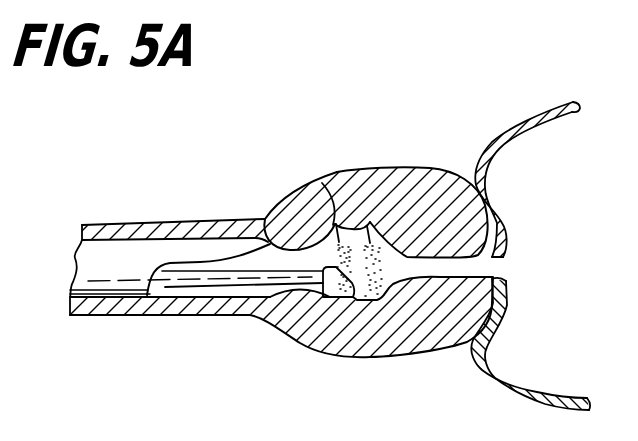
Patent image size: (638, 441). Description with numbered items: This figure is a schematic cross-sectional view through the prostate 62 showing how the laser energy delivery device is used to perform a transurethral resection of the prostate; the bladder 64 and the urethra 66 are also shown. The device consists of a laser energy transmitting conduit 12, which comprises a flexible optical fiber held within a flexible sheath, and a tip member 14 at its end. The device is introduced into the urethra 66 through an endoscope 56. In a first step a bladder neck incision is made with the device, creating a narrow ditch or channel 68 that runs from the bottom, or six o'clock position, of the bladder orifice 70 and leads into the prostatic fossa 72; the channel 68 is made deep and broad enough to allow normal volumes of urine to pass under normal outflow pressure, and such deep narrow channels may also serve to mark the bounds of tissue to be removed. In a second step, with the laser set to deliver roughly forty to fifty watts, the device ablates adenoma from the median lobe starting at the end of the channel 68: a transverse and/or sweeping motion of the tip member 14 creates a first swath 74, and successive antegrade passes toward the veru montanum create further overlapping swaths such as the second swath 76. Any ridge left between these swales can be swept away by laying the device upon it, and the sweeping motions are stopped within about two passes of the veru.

The laser energy transmitting conduit 12 is at (236, 276).
The tip member 14 is at (337, 284).
The endoscope 56 is at (128, 278).
The prostate 62 is at (297, 330).
The bladder 64 is at (550, 137).
The urethra 66 is at (93, 303).
The channel 68 is at (446, 272).
The bladder orifice 70 is at (507, 263).
The prostatic fossa 72 is at (442, 230).
The first swath 74 is at (366, 228).
The second swath 76 is at (336, 225).